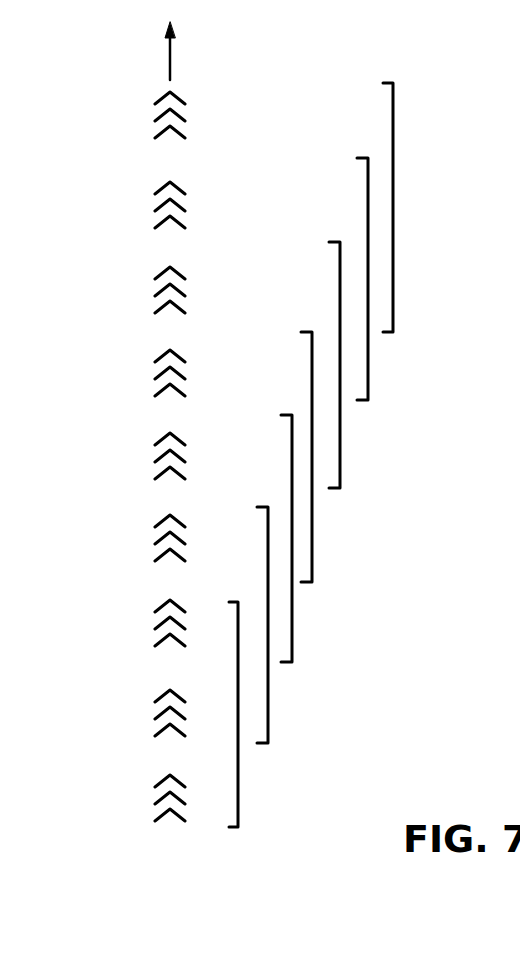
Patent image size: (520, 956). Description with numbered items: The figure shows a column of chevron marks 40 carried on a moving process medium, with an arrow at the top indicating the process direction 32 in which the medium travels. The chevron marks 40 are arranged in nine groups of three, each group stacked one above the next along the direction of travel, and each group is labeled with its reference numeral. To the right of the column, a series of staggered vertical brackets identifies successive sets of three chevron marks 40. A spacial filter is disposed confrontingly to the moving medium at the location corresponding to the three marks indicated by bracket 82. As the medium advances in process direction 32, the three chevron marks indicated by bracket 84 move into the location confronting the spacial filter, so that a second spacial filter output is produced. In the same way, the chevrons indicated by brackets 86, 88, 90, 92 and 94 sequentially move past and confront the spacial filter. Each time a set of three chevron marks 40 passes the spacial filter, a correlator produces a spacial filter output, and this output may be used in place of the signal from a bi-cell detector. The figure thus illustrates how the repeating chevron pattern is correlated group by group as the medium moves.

The process direction 32 is at (170, 50).
The chevron marks 40 is at (152, 130).
The bracket 82 is at (393, 312).
The bracket 84 is at (368, 378).
The bracket 86 is at (340, 466).
The bracket 88 is at (312, 555).
The bracket 90 is at (292, 635).
The bracket 92 is at (268, 720).
The bracket 94 is at (238, 802).